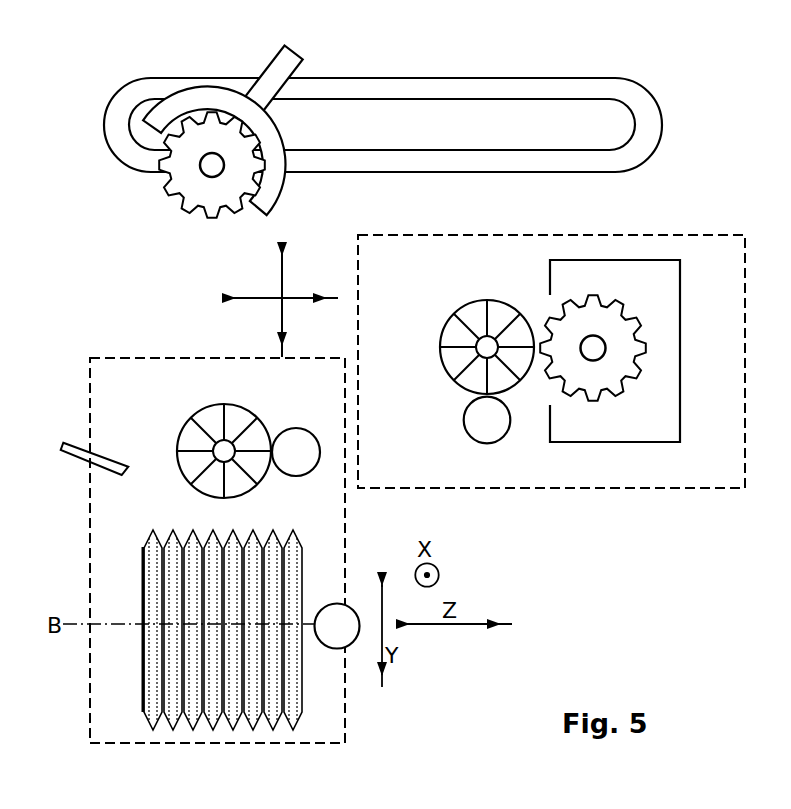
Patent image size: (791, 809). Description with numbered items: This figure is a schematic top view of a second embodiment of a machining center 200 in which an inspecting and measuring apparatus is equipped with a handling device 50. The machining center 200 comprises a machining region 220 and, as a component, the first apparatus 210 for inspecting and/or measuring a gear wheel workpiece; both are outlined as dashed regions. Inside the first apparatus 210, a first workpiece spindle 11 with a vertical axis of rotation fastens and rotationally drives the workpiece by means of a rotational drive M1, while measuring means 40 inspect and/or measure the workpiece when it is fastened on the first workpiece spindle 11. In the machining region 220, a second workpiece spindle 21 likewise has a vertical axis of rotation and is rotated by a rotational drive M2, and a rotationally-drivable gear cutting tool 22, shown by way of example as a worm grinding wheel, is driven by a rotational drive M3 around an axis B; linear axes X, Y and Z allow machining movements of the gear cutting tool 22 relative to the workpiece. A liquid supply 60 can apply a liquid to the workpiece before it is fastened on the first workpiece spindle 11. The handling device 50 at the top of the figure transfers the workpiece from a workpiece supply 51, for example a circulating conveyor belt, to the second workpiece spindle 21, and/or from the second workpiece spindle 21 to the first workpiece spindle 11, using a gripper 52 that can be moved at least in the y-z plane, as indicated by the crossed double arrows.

The handling device 50 is at (379, 129).
The workpiece supply 51 is at (643, 148).
The gripper 52 is at (275, 187).
The machining center 200 is at (107, 268).
The first apparatus 210 is at (728, 480).
The machining region 220 is at (335, 396).
The first workpiece spindle 11 is at (482, 300).
The measuring means 40 is at (667, 291).
The second workpiece spindle 21 is at (207, 407).
The gear cutting tool 22 is at (298, 673).
The liquid supply 60 is at (93, 465).
The rotational drive M1 is at (487, 420).
The rotational drive M2 is at (296, 452).
The rotational drive M3 is at (337, 626).